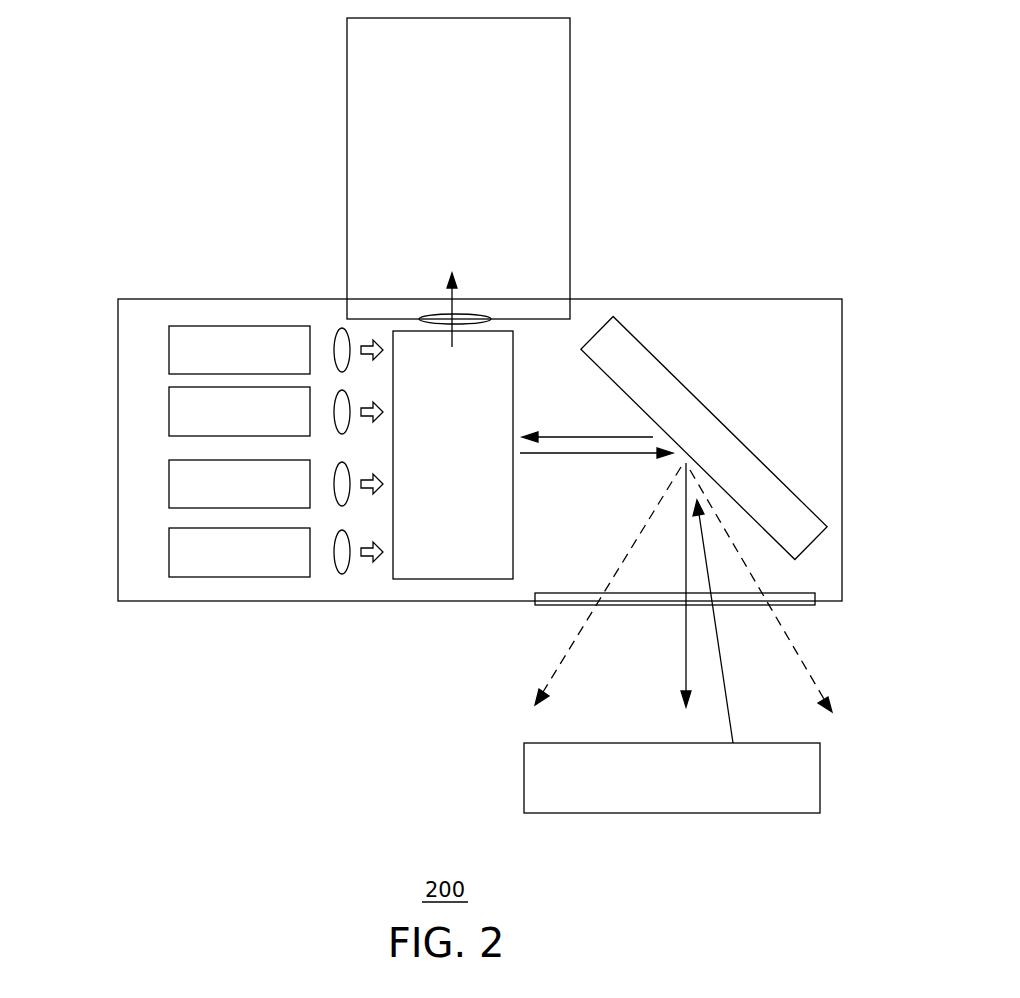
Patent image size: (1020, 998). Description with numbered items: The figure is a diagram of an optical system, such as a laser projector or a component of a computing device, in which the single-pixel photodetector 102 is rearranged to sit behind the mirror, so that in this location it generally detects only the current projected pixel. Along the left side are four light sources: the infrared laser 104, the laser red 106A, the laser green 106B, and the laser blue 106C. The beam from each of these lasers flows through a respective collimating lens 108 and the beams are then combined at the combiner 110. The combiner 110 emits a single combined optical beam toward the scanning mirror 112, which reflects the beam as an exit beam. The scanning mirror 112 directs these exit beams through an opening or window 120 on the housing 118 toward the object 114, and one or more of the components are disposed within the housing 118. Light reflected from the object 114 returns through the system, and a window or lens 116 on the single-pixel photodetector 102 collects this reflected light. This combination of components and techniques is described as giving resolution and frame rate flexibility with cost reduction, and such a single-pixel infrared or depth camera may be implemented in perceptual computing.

The single-pixel photodetector 102 is at (570, 63).
The infrared laser 104 is at (199, 326).
The laser red 106A is at (168, 412).
The laser green 106B is at (168, 484).
The laser blue 106C is at (168, 554).
The collimating lenses 108 is at (341, 576).
The combiner 110 is at (440, 580).
The scanning mirror 112 is at (715, 413).
The object 114 is at (820, 762).
The window or lens 116 is at (470, 319).
The housing 118 is at (727, 299).
The opening or window 120 is at (795, 605).